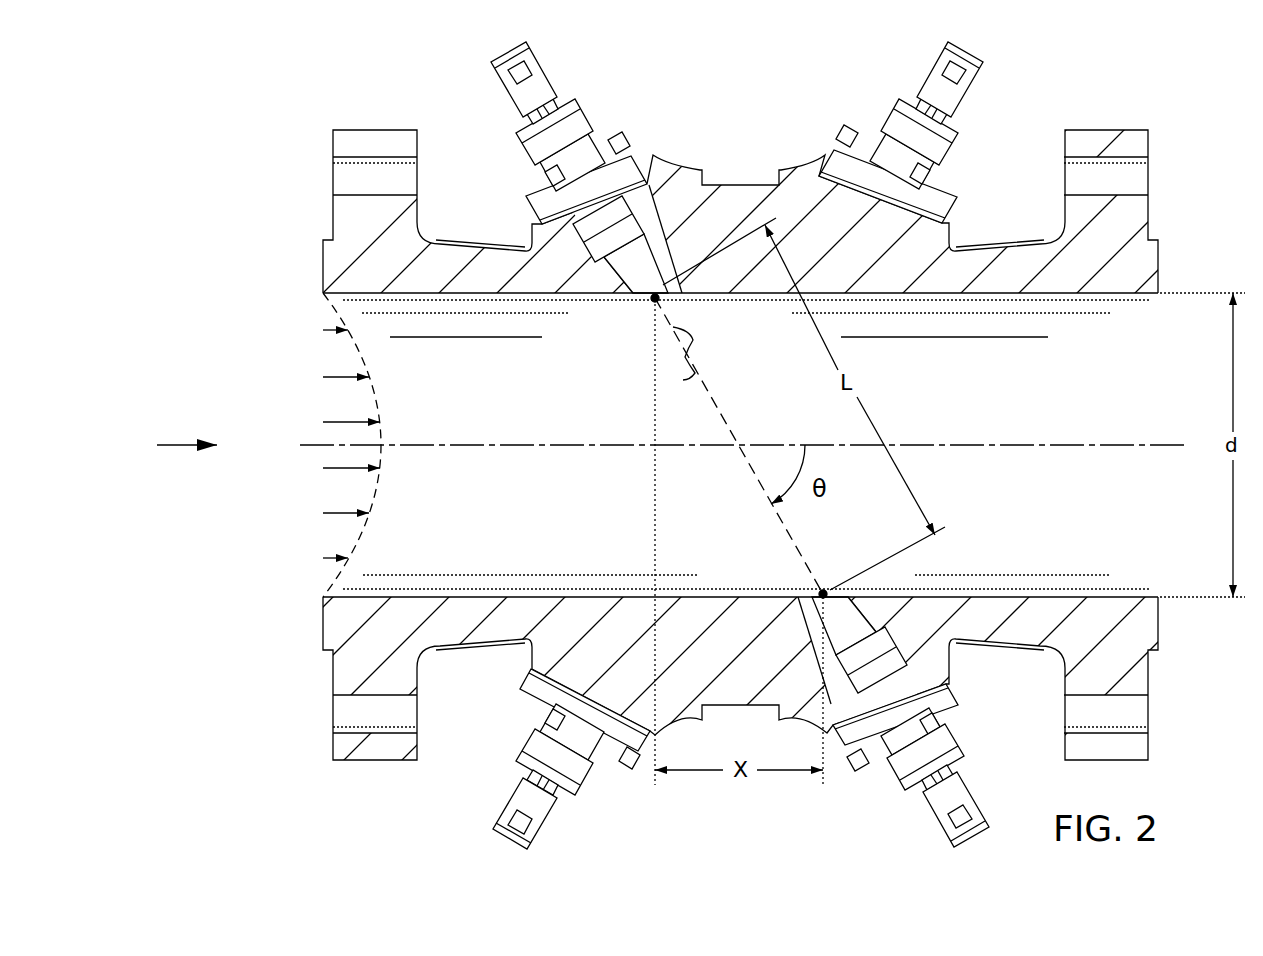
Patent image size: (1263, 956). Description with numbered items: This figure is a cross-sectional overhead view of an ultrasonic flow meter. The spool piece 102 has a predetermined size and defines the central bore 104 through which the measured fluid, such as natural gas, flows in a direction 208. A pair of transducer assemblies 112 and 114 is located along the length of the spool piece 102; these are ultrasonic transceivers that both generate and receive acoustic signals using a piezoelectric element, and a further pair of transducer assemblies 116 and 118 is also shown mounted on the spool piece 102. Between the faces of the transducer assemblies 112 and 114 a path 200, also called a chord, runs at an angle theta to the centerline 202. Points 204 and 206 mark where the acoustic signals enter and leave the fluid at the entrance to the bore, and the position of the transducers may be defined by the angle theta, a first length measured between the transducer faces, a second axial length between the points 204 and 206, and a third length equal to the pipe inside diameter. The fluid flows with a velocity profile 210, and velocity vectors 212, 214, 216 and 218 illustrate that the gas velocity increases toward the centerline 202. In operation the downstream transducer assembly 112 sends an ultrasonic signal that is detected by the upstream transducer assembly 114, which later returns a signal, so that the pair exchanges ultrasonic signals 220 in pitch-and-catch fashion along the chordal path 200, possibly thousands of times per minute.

The spool piece 102 is at (738, 183).
The central bore 104 is at (1002, 401).
The transducer assembly 112 is at (933, 823).
The transducer assembly 114 is at (594, 110).
The transducer assembly 116 is at (547, 827).
The transducer assembly 118 is at (937, 63).
The path 200 is at (790, 541).
The centerline 202 is at (1015, 447).
The point 204 is at (828, 590).
The point 206 is at (650, 305).
The direction 208 is at (182, 443).
The velocity profile 210 is at (377, 390).
The velocity vector 212 is at (323, 377).
The velocity vector 214 is at (323, 422).
The velocity vector 216 is at (323, 468).
The velocity vector 218 is at (323, 513).
The ultrasonic signals 220 is at (695, 343).